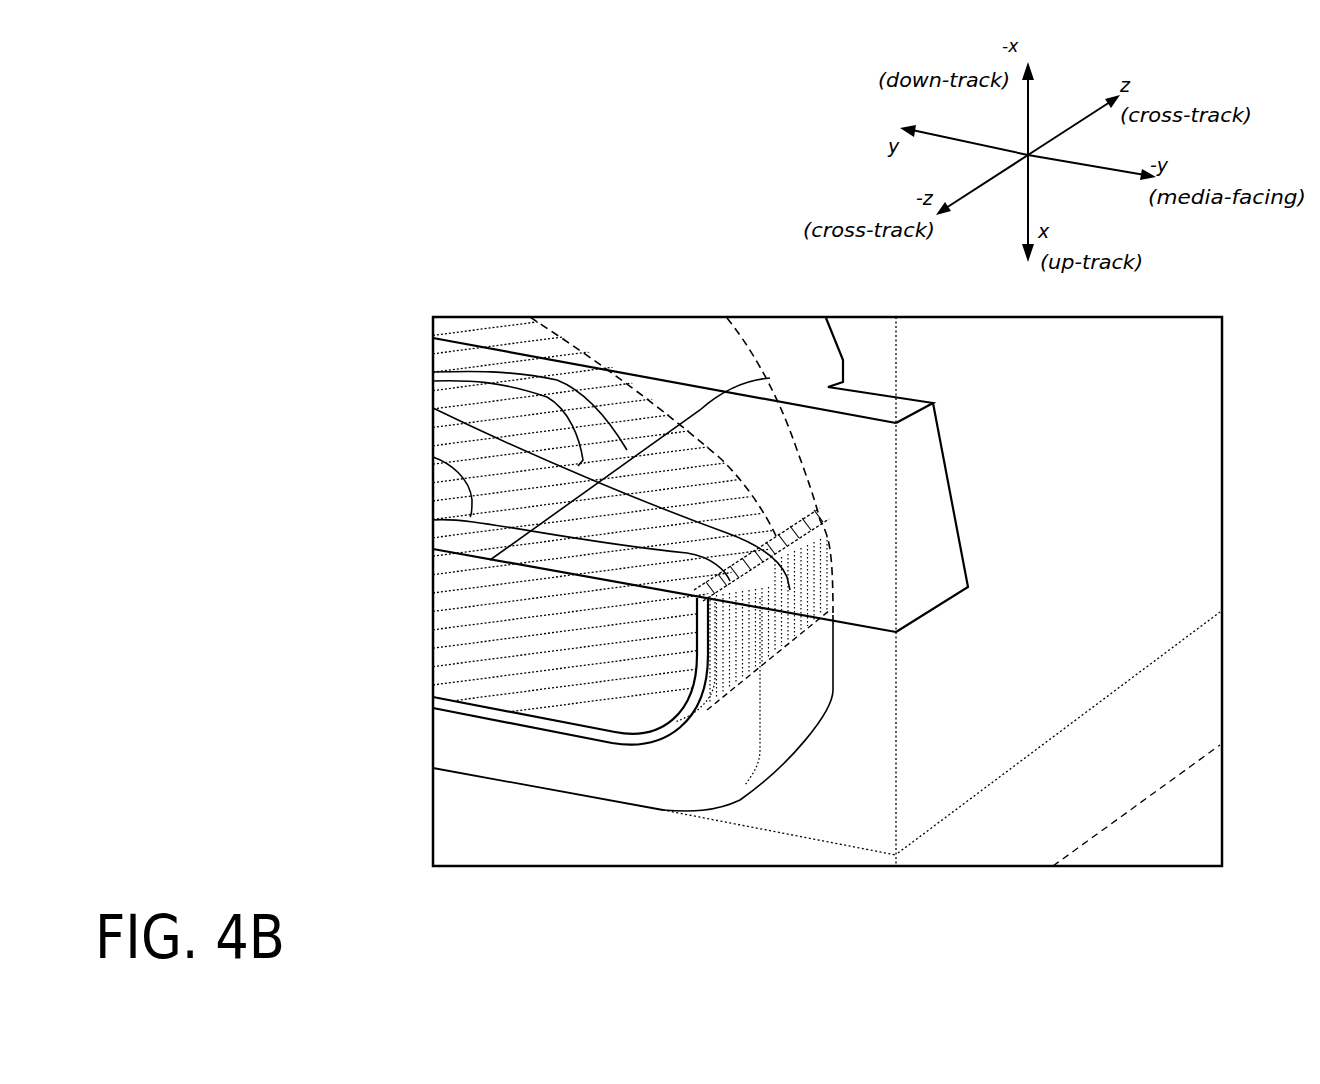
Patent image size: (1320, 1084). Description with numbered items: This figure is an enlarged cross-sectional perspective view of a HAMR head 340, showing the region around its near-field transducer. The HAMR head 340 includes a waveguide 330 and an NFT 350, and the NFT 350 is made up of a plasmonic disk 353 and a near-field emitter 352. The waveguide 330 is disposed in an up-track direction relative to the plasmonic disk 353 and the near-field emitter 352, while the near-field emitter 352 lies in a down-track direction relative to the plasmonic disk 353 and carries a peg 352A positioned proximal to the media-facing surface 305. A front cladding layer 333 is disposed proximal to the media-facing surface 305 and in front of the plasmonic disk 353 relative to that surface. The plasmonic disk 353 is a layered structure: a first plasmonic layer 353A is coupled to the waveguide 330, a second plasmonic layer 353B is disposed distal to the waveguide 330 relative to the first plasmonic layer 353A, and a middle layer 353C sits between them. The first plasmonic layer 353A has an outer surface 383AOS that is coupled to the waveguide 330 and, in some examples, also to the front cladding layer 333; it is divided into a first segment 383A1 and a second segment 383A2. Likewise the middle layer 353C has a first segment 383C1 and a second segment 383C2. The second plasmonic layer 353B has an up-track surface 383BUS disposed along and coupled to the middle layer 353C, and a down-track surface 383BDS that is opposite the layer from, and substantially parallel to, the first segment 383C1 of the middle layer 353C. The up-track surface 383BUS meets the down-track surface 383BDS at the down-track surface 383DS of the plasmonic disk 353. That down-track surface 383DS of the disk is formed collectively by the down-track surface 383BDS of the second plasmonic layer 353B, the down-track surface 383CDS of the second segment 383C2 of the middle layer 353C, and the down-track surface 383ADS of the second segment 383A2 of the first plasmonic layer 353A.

The media-facing surface 305 is at (827, 591).
The waveguide 330 is at (664, 811).
The front cladding layer 333 is at (842, 802).
The HAMR head 340 is at (252, 126).
The NFT 350 is at (198, 331).
The near-field emitter 352 is at (418, 420).
The peg 352A is at (935, 568).
The plasmonic disk 353 is at (417, 670).
The first plasmonic layer 353A is at (553, 763).
The second plasmonic layer 353B is at (585, 693).
The middle layer 353C is at (647, 735).
The down-track surface of plasmonic disk 383DS is at (432, 381).
The down-track surface of second plasmonic layer 383BDS is at (433, 457).
The up-track surface of second plasmonic layer 383BUS is at (690, 632).
The first segment of middle layer 383C1 is at (503, 718).
The second segment of middle layer 383C2 is at (691, 656).
The first segment of first plasmonic layer 383A1 is at (510, 750).
The second segment of first plasmonic layer 383A2 is at (745, 707).
The outer surface of first plasmonic layer 383AOS is at (810, 674).
The down-track surface of second segment of first plasmonic layer 383ADS is at (803, 580).
The down-track surface of second segment of middle layer 383CDS is at (780, 548).